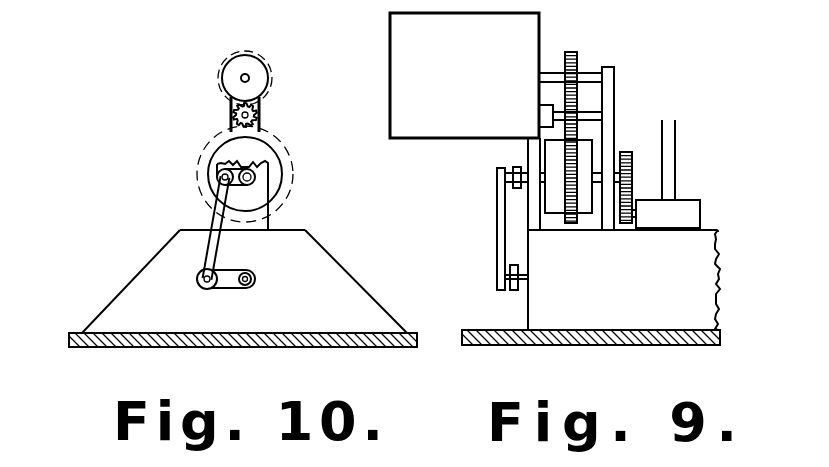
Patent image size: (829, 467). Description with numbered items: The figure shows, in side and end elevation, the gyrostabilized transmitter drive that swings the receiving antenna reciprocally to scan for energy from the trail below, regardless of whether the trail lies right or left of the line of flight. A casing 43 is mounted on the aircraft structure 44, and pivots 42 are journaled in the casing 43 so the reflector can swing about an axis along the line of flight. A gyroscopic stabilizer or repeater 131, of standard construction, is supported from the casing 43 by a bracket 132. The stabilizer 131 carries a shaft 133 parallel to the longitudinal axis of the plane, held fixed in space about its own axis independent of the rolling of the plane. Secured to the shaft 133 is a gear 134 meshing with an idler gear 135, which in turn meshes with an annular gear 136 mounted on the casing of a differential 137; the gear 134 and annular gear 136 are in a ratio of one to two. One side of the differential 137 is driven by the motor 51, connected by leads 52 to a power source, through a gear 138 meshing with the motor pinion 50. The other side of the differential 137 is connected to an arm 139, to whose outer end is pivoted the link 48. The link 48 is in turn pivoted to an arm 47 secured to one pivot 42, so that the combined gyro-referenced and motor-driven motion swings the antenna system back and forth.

In FIG. 10, the pivots 42 is at (257, 278).
In FIG. 9, the pivots 42 is at (526, 277).
In FIG. 10, the casing 43 is at (125, 287).
In FIG. 9, the casing 43 is at (710, 280).
In FIG. 10, the aircraft structure 44 is at (72, 345).
In FIG. 9, the aircraft structure 44 is at (722, 337).
In FIG. 10, the arm 47 is at (222, 292).
In FIG. 9, the arm 47 is at (514, 291).
In FIG. 10, the link 48 is at (210, 218).
In FIG. 9, the link 48 is at (497, 232).
In FIG. 9, the pinion 50 is at (625, 225).
In FIG. 9, the motor 51 is at (692, 210).
In FIG. 9, the leads 52 is at (668, 155).
In FIG. 9, the gyroscopic stabilizer 131 is at (390, 70).
In FIG. 10, the bracket 132 is at (262, 228).
In FIG. 9, the bracket 132 is at (527, 152).
In FIG. 10, the shaft 133 is at (249, 78).
In FIG. 9, the shaft 133 is at (590, 73).
In FIG. 10, the gear 134 is at (230, 55).
In FIG. 9, the gear 134 is at (572, 52).
In FIG. 10, the idler gear 135 is at (229, 109).
In FIG. 9, the idler gear 135 is at (580, 108).
In FIG. 10, the annular gear 136 is at (207, 147).
In FIG. 9, the annular gear 136 is at (574, 222).
In FIG. 10, the differential 137 is at (260, 153).
In FIG. 9, the differential 137 is at (555, 213).
In FIG. 9, the gear 138 is at (627, 152).
In FIG. 10, the arm 139 is at (243, 186).
In FIG. 9, the arm 139 is at (513, 168).